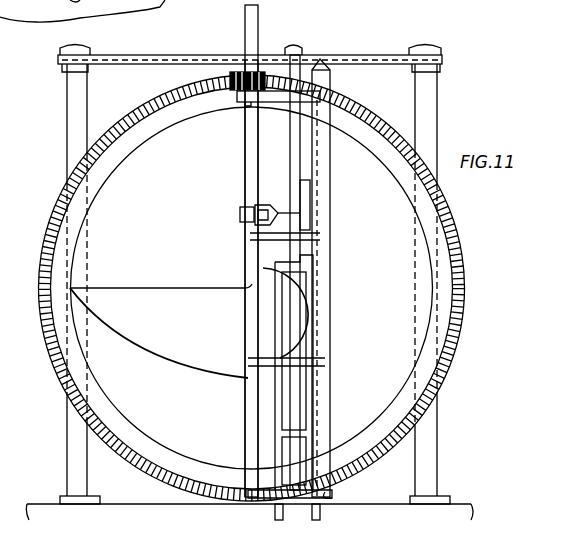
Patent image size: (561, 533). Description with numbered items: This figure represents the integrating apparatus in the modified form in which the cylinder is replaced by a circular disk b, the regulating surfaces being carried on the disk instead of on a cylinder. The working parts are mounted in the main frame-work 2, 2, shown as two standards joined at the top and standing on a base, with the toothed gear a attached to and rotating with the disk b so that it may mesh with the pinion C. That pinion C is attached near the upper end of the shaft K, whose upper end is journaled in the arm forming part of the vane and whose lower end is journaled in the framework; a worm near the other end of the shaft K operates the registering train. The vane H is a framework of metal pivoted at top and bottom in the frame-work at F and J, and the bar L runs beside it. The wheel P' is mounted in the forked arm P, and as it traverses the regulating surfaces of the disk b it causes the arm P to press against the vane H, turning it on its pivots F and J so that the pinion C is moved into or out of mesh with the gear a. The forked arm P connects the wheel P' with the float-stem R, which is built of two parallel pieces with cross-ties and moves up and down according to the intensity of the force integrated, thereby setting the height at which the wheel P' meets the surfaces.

The main frame-work 2 is at (66, 118).
The gear a is at (125, 122).
The circular disk b is at (251, 288).
The shaft K is at (243, 38).
The vane H is at (245, 160).
The pinion C is at (228, 74).
The bar L is at (285, 150).
The pivot F is at (328, 68).
The forked arm P is at (285, 210).
The wheel P' is at (240, 222).
The float-stem R is at (277, 408).
The pivot J is at (330, 498).